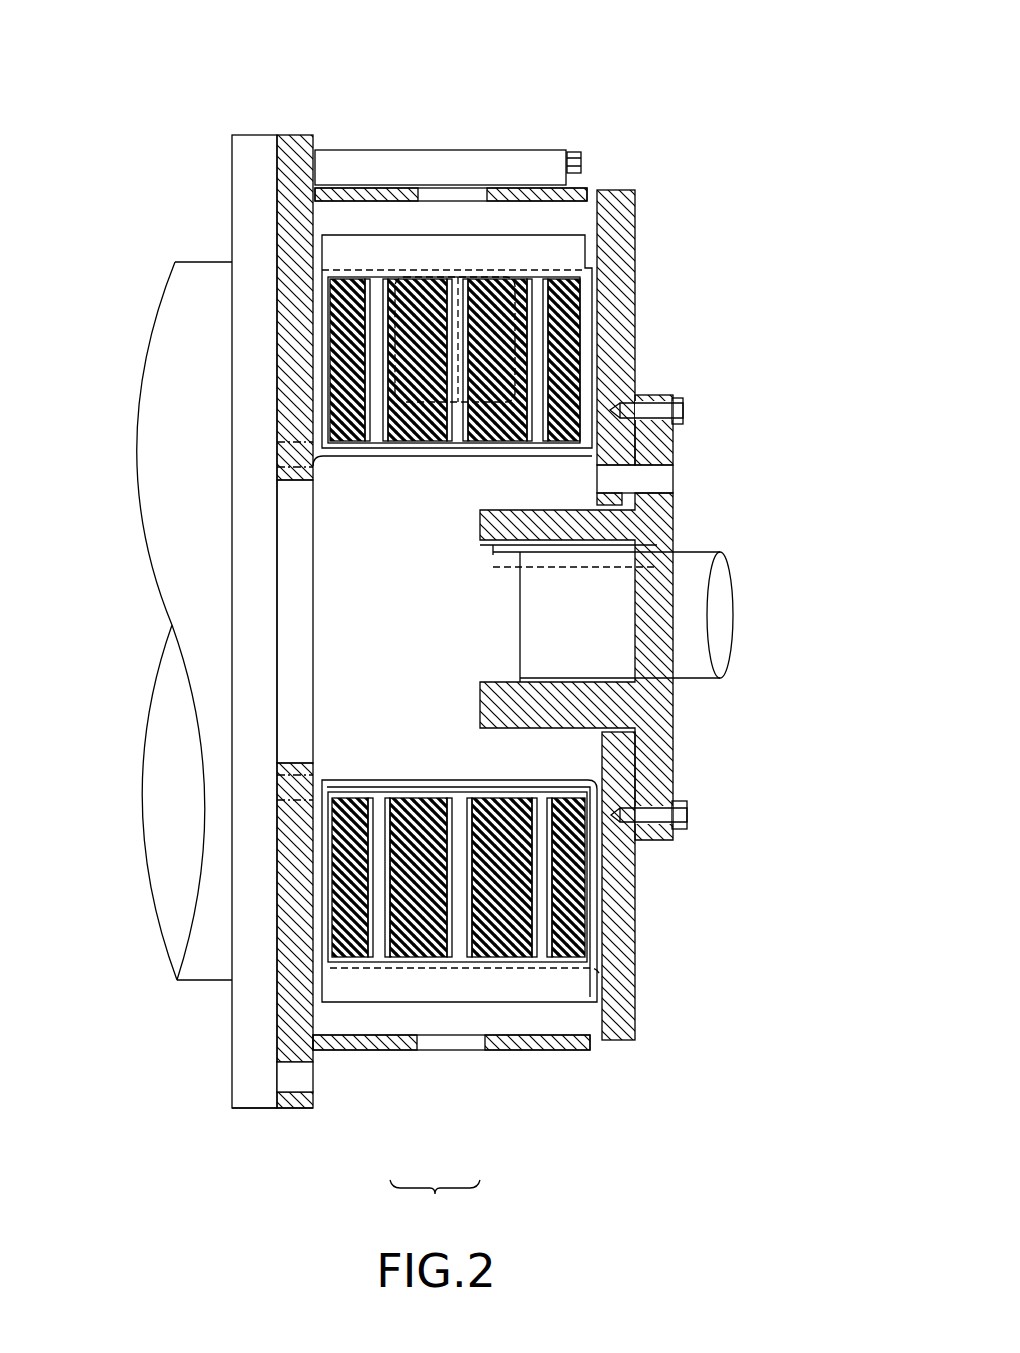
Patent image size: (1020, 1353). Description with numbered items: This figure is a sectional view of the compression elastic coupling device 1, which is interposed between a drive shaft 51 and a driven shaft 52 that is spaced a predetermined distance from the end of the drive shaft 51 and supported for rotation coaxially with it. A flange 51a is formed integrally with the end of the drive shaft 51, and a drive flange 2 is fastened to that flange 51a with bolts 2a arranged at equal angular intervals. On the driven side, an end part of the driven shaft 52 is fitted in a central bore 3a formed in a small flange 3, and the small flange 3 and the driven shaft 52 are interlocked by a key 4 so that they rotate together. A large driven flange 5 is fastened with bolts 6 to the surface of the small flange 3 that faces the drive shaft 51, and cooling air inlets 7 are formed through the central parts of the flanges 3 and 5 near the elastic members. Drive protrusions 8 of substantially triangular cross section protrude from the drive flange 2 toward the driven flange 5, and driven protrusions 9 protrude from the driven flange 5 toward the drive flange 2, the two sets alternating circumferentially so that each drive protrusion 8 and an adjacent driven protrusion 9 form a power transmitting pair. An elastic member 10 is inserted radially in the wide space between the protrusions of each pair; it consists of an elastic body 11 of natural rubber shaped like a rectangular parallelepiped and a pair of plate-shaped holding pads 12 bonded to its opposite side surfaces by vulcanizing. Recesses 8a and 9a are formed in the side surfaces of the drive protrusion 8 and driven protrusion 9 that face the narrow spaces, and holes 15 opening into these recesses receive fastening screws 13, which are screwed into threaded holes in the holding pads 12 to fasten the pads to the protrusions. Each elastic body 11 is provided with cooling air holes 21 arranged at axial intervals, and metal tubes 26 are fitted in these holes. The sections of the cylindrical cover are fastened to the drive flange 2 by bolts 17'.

The compression elastic coupling device 1 is at (346, 125).
The drive flange 2 is at (290, 1033).
The bolts 2a is at (290, 1078).
The small flange 3 is at (667, 763).
The central bore 3a is at (557, 675).
The key 4 is at (663, 547).
The driven flange 5 is at (640, 863).
The bolts 6 is at (695, 410).
The cooling air inlets 7 is at (657, 482).
The drive protrusions 8 is at (357, 460).
The recess 8a is at (512, 275).
The driven protrusions 9 is at (357, 782).
The recess 9a is at (451, 1042).
The elastic member 10 is at (435, 1203).
The elastic body 11 is at (513, 930).
The holding pads 12 is at (397, 968).
The fastening screw 13 is at (452, 275).
The holes 15 is at (480, 275).
The bolts 17' is at (505, 150).
The cooling air holes 21 is at (460, 952).
The metal tubes 26 is at (393, 955).
The drive shaft 51 is at (150, 930).
The flange 51a is at (253, 1113).
The driven shaft 52 is at (687, 667).